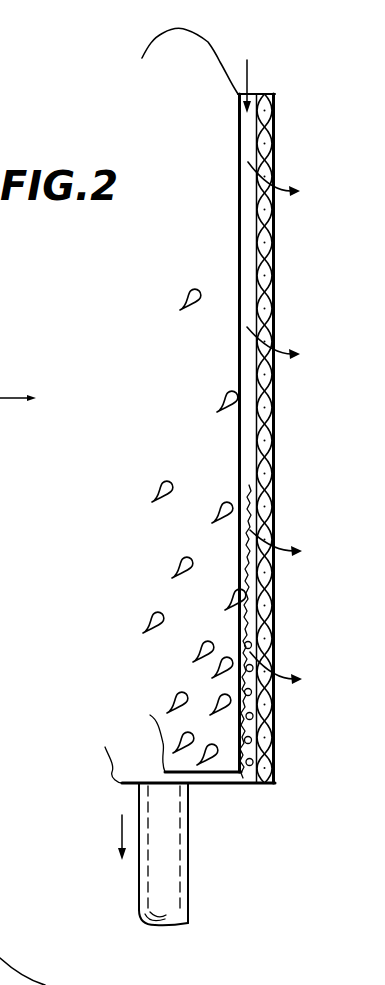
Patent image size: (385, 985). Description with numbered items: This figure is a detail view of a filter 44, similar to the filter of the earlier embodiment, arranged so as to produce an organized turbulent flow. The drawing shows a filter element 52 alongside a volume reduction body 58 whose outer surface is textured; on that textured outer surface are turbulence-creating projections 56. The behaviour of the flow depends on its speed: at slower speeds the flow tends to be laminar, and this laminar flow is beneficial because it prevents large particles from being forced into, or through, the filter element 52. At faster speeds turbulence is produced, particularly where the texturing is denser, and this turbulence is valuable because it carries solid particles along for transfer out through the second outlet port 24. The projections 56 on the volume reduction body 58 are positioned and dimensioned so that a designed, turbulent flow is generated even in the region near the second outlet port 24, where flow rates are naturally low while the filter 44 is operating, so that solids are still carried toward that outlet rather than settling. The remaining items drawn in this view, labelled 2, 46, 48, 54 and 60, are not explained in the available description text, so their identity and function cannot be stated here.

The apparatus 2 is at (18, 357).
The second outlet port 24 is at (190, 860).
The filter 44 is at (176, 347).
The channel wall 46 is at (226, 217).
The outer wall 48 is at (269, 94).
The filter element 52 is at (276, 428).
The base 54 is at (22, 982).
The turbulence-creating projections 56 is at (155, 492).
The volume reduction body 58 is at (203, 70).
The support 60 is at (103, 984).